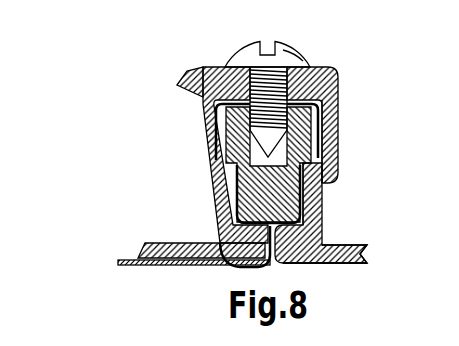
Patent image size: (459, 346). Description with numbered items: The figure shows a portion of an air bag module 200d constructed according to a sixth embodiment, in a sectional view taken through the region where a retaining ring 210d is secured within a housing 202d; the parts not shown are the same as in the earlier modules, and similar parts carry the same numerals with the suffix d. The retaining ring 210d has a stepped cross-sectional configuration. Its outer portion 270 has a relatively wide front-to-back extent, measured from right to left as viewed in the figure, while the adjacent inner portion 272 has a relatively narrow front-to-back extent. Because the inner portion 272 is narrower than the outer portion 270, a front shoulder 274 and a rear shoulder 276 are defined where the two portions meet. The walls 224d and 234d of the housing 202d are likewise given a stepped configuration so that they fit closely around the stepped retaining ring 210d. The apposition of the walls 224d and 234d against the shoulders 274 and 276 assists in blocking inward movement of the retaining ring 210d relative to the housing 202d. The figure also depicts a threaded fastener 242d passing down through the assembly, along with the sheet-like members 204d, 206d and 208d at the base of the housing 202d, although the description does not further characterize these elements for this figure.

The air bag module 200d is at (251, 163).
The retaining ring 210d is at (222, 122).
The outer portion 270 is at (338, 103).
The wall 234d is at (338, 132).
The rear shoulder 276 is at (238, 182).
The wall 224d is at (220, 124).
The screw 242d is at (298, 46).
The inner portion 272 is at (278, 193).
The front shoulder 274 is at (312, 182).
The second panel 204d is at (357, 246).
The housing 202d is at (333, 268).
The first panel 206d is at (150, 243).
The liner layer 208d is at (153, 260).